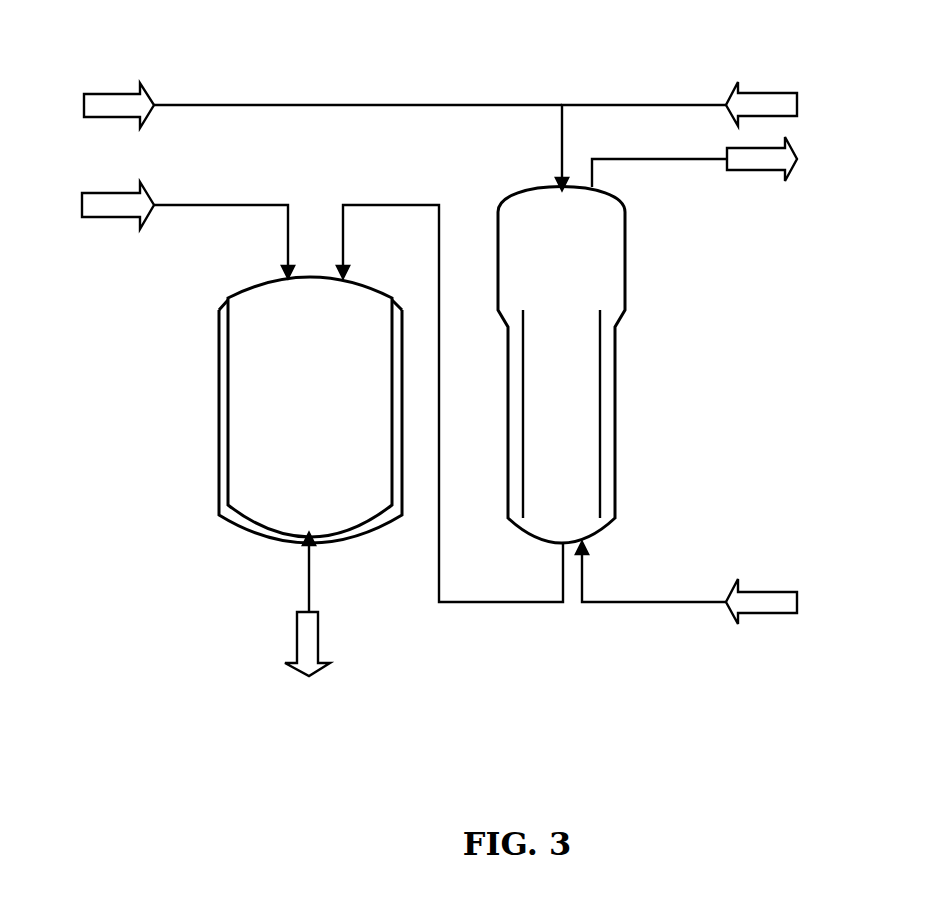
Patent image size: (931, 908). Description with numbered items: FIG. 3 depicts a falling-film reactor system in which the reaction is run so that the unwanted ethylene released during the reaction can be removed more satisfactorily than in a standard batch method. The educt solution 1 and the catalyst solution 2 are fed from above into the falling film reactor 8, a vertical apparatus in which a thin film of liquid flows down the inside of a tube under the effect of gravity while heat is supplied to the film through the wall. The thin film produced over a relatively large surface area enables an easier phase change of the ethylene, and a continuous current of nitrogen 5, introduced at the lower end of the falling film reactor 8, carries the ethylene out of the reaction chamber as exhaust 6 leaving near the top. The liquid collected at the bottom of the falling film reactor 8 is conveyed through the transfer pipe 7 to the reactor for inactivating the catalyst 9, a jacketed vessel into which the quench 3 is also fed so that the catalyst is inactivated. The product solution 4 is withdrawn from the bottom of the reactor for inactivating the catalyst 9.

The educt solution 1 is at (693, 136).
The catalyst solution 2 is at (303, 105).
The quench 3 is at (169, 230).
The product solution 4 is at (307, 628).
The nitrogen 5 is at (703, 583).
The exhaust 6 is at (710, 162).
The transfer pipe 7 is at (450, 433).
The falling film reactor 8 is at (561, 365).
The reactor for inactivating the catalyst 9 is at (310, 410).